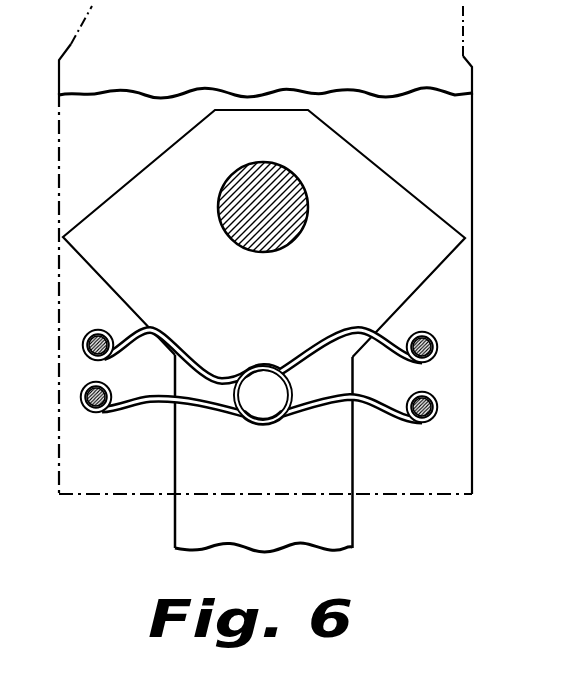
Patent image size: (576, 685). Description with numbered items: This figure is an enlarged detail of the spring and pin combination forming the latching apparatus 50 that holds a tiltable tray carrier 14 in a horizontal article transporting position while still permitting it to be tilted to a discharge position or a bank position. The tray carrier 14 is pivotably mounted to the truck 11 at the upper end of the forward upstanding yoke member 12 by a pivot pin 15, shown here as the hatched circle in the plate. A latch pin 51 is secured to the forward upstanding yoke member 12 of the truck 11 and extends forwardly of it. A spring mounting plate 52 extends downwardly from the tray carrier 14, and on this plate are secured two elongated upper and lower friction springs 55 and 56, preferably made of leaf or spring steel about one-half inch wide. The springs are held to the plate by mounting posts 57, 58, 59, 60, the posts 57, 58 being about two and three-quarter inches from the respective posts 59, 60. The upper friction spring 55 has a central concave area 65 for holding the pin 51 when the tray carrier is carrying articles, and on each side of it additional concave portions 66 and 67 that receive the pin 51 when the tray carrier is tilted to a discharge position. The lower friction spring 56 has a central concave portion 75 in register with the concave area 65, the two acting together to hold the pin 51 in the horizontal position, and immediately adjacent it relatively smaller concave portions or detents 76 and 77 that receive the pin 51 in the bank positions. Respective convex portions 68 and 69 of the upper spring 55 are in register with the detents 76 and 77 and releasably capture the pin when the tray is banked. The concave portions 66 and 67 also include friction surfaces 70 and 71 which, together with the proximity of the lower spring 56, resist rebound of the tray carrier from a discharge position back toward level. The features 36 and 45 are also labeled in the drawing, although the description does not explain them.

The truck 11 is at (172, 540).
The forward upstanding yoke member 12 is at (272, 301).
The tray carrier 14 is at (57, 76).
The pivot pin 15 is at (302, 185).
The housing wall 36 is at (9, 498).
The cover 45 is at (0, 0).
The latching apparatus 50 is at (263, 354).
The latch pin 51 is at (263, 395).
The spring mounting plate 52 is at (58, 339).
The upper friction spring 55 is at (160, 325).
The lower friction spring 56 is at (150, 406).
The mounting post 57 is at (109, 331).
The mounting post 58 is at (98, 411).
The mounting post 59 is at (432, 333).
The mounting post 60 is at (425, 422).
The central concave area 65 is at (265, 365).
The concave portion 66 is at (181, 340).
The concave portion 67 is at (368, 330).
The convex portion 68 is at (213, 378).
The convex portion 69 is at (303, 377).
The friction surface 70 is at (188, 363).
The friction surface 71 is at (335, 362).
The central concave portion 75 is at (266, 428).
The detent 76 is at (228, 411).
The detent 77 is at (317, 404).